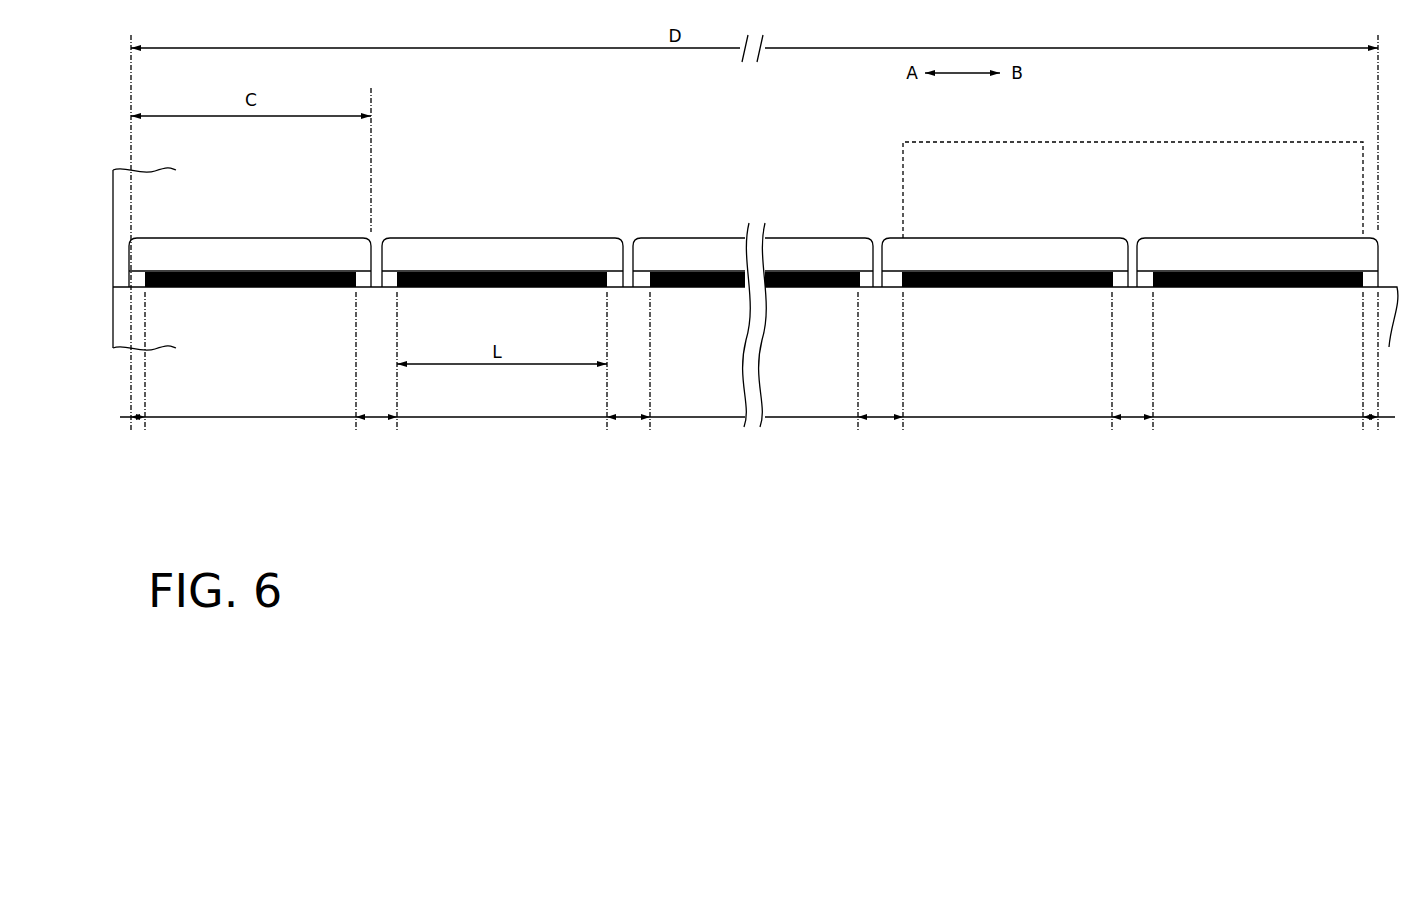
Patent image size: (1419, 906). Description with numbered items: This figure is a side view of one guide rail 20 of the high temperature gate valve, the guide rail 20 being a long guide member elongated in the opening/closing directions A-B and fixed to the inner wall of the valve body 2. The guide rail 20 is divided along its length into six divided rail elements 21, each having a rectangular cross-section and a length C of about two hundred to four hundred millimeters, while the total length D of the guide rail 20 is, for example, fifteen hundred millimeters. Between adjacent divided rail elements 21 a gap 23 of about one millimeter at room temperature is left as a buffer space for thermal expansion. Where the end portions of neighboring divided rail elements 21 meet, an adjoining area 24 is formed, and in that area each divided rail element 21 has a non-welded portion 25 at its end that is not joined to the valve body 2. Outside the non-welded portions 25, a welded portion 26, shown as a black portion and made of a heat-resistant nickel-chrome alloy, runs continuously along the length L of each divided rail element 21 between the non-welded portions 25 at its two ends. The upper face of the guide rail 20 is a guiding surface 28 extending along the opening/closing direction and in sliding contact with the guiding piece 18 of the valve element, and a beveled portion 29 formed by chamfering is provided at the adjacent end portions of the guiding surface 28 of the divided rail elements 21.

The valve body 2 is at (104, 185).
The guiding piece 18 is at (1190, 142).
The guide rail 20 is at (215, 220).
The divided rail element 21 is at (268, 248).
The gap 23 is at (385, 245).
The adjoining area 24 is at (364, 231).
The non-welded portion 25 is at (134, 420).
The welded portion 26 is at (248, 420).
The guiding surface 28 is at (320, 238).
The beveled portion 29 is at (1125, 237).